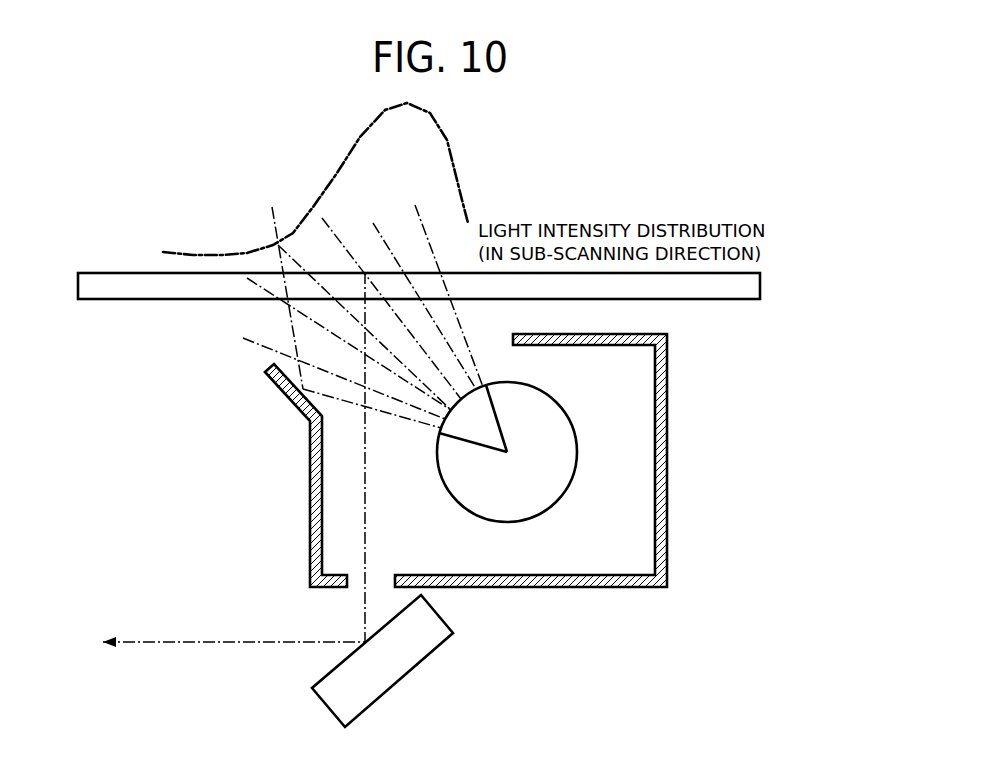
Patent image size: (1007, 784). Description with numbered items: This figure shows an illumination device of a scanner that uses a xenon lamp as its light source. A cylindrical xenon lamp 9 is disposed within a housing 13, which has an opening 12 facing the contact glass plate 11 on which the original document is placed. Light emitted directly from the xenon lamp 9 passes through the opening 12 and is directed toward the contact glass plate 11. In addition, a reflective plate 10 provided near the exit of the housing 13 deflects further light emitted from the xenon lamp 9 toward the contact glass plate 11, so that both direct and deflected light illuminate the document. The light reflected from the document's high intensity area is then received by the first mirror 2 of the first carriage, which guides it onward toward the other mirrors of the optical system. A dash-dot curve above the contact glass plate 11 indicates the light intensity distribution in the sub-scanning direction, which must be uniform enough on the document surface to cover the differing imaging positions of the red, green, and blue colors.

The first mirror 2 is at (425, 652).
The cylindrical xenon lamp 9 is at (568, 433).
The reflective plate 10 is at (288, 392).
The contact glass plate 11 is at (122, 293).
The opening 12 is at (481, 326).
The housing 13 is at (667, 372).